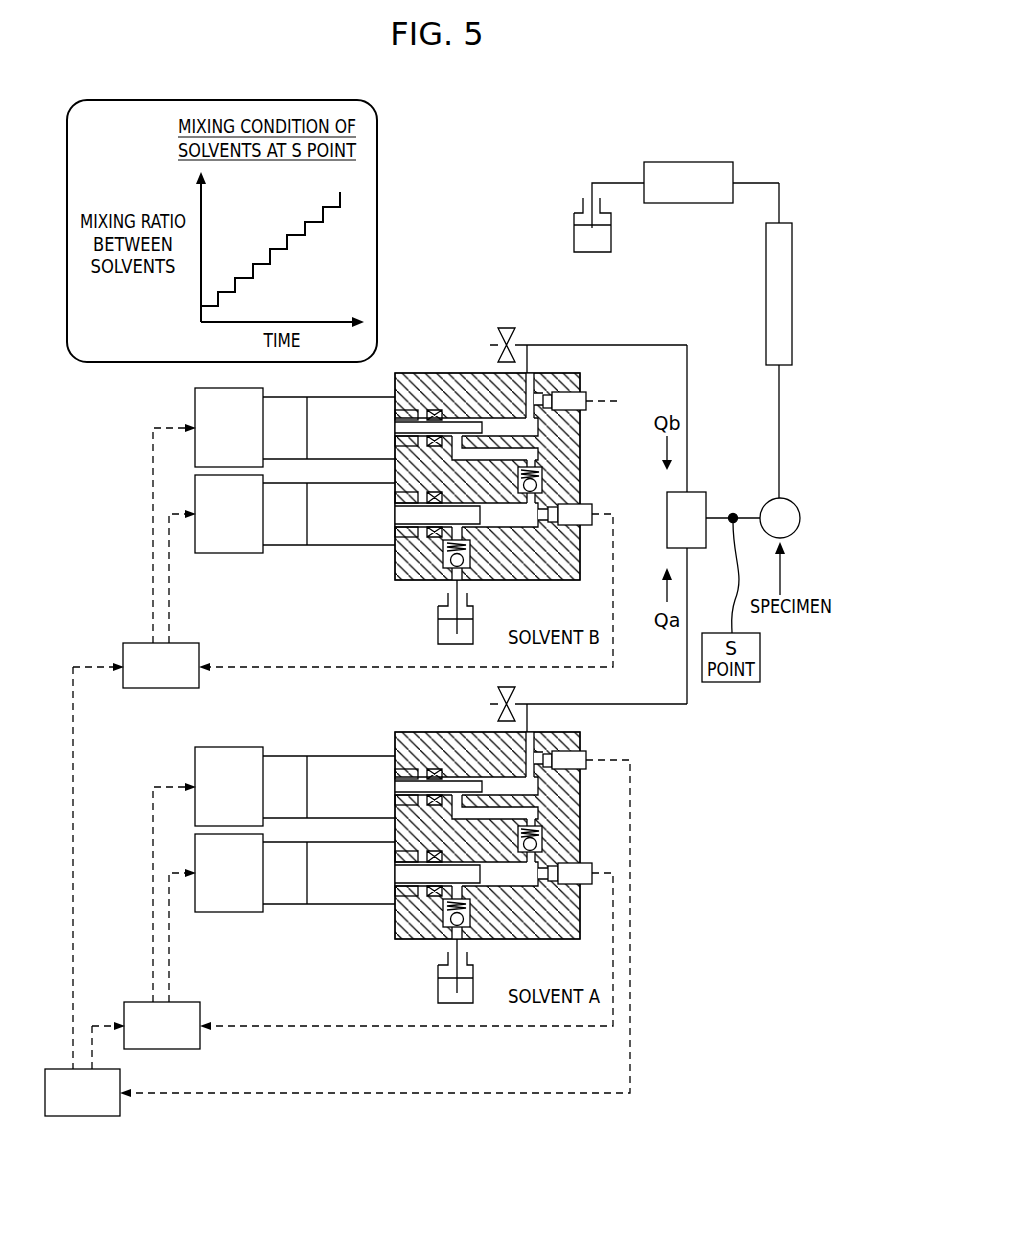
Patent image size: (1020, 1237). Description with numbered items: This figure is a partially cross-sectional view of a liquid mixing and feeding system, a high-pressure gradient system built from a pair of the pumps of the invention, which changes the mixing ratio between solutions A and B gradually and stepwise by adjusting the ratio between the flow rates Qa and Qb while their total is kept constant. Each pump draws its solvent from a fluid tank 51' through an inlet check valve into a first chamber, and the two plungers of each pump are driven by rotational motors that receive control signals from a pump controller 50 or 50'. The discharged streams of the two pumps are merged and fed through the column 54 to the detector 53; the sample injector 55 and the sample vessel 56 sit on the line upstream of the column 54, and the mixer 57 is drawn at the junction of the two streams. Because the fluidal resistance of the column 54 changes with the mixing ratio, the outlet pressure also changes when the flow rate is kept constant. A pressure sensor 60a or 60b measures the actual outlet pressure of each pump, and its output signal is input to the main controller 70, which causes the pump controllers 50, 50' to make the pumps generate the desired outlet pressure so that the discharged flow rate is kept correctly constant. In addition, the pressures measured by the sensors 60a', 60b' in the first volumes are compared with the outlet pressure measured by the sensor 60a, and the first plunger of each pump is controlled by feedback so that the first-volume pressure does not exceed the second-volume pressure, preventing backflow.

The controller 50 is at (161, 916).
The controller 50' is at (154, 556).
The fluid tank 51' is at (493, 801).
The detector 53 is at (788, 508).
The column 54 is at (767, 277).
The sample injector 55 is at (696, 200).
The sample vessel 56 is at (575, 237).
The mixer 57 is at (697, 496).
The pressure sensor 60a is at (399, 907).
The pressure sensor 60a' is at (453, 928).
The pressure sensor 60b is at (601, 386).
The pressure sensor 60b' is at (433, 566).
The main controller 70 is at (123, 1080).